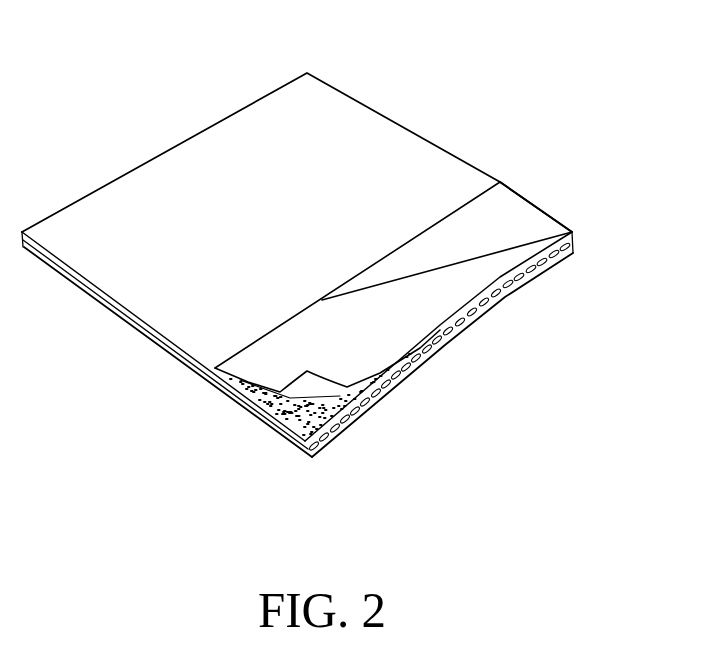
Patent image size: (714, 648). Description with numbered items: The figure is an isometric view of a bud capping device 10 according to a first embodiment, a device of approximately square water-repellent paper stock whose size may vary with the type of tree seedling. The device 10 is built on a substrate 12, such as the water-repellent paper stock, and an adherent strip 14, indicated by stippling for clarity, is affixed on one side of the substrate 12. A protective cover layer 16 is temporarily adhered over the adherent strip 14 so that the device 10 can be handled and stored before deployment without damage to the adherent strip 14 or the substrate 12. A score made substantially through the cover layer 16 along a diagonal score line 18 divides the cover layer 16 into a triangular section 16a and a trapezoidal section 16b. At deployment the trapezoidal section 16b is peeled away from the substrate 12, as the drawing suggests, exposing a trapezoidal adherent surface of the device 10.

The bud capping device 10 is at (536, 52).
The substrate 12 is at (291, 243).
The adherent strip 14 is at (320, 394).
The protective cover layer 16 is at (382, 358).
The triangular section 16a is at (560, 199).
The trapezoidal section 16b is at (512, 314).
The diagonal score line 18 is at (459, 258).